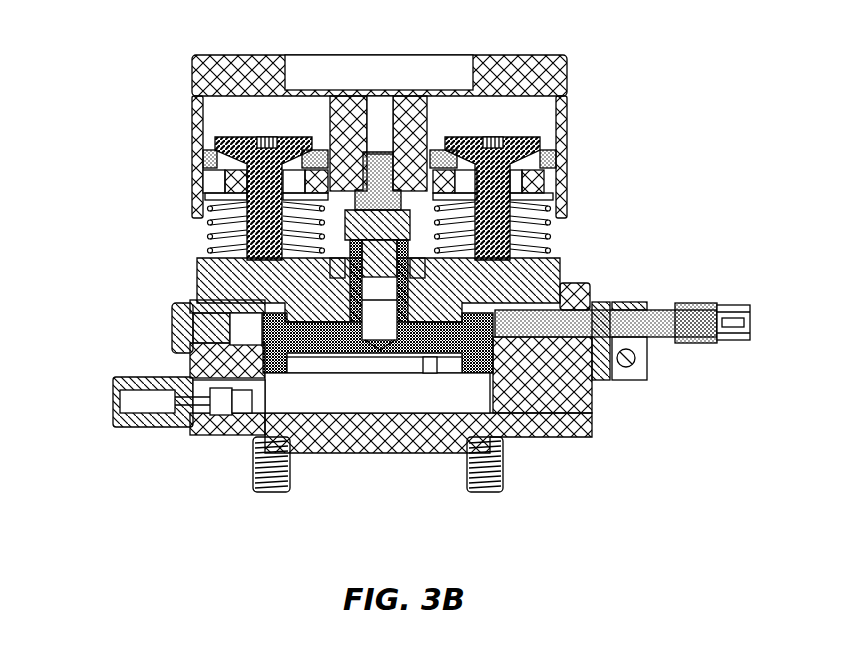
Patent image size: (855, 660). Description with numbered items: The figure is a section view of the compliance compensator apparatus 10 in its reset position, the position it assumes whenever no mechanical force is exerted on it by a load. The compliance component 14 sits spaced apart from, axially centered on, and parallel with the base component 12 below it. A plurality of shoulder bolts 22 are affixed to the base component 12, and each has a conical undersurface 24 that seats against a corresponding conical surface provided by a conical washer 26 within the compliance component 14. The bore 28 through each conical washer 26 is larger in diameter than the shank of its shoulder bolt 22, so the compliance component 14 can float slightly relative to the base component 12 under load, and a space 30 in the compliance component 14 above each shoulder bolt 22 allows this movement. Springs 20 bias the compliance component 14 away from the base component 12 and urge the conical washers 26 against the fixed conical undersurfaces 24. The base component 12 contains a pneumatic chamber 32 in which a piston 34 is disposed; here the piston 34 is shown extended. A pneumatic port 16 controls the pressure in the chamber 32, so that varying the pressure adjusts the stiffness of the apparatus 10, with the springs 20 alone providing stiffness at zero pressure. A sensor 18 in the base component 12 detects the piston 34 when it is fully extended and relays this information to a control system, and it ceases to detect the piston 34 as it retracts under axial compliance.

The compliance compensator apparatus 10 is at (118, 76).
The base component 12 is at (655, 420).
The compliance component 14 is at (615, 122).
The pneumatic port 16 is at (160, 428).
The sensor 18 is at (697, 302).
The springs 20 is at (525, 226).
The shoulder bolts 22 is at (510, 197).
The conical undersurface 24 is at (233, 163).
The conical washer 26 is at (547, 157).
The bore 28 is at (222, 177).
The space 30 is at (505, 113).
The pneumatic chamber 32 is at (305, 395).
The piston 34 is at (462, 360).